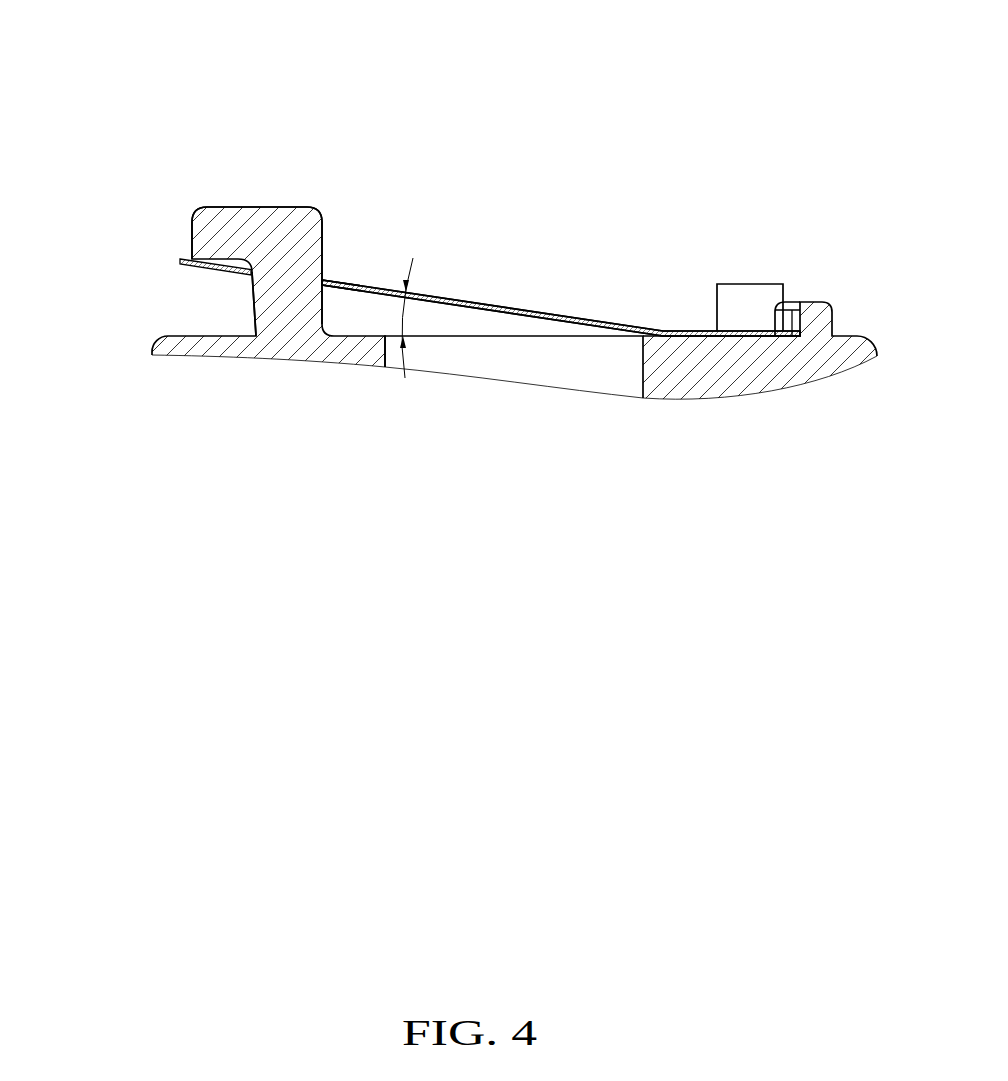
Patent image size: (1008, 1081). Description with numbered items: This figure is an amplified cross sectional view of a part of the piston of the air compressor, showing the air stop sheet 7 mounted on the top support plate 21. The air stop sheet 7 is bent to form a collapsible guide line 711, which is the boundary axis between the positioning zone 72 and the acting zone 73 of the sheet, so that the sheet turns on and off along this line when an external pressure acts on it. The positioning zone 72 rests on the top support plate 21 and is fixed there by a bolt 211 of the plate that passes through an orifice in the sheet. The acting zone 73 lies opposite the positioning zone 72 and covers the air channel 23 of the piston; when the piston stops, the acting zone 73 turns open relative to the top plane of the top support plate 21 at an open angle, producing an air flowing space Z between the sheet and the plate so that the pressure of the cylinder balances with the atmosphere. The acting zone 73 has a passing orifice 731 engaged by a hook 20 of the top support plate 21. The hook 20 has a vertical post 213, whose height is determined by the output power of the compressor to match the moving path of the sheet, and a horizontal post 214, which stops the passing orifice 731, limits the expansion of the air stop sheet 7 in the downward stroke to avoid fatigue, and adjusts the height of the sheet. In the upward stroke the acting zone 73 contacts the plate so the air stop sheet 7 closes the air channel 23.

The hook 20 is at (303, 232).
The top support plate 21 is at (847, 336).
The bolt 211 is at (752, 293).
The vertical post 213 is at (283, 303).
The horizontal post 214 is at (218, 233).
The air channel 23 is at (562, 370).
The air stop sheet 7 is at (567, 315).
The positioning zone 72 is at (702, 330).
The collapsible guide line 711 is at (665, 330).
The acting zone 73 is at (493, 307).
The passing orifice 731 is at (335, 281).
The air flowing space Z is at (460, 317).